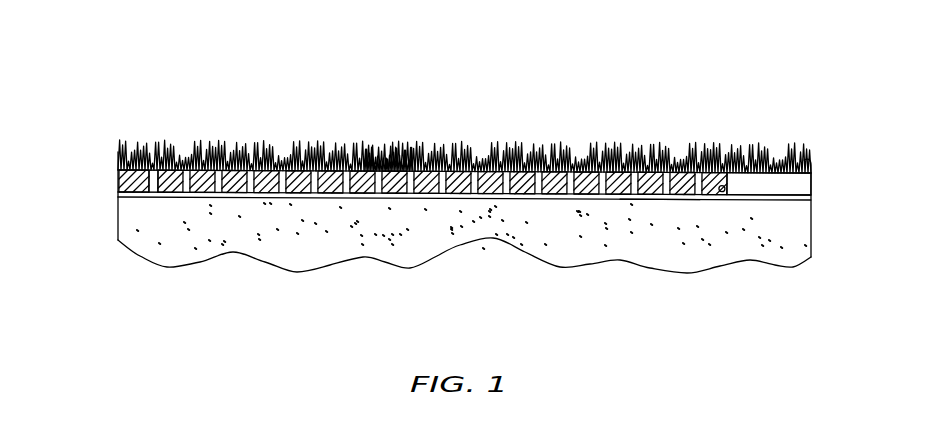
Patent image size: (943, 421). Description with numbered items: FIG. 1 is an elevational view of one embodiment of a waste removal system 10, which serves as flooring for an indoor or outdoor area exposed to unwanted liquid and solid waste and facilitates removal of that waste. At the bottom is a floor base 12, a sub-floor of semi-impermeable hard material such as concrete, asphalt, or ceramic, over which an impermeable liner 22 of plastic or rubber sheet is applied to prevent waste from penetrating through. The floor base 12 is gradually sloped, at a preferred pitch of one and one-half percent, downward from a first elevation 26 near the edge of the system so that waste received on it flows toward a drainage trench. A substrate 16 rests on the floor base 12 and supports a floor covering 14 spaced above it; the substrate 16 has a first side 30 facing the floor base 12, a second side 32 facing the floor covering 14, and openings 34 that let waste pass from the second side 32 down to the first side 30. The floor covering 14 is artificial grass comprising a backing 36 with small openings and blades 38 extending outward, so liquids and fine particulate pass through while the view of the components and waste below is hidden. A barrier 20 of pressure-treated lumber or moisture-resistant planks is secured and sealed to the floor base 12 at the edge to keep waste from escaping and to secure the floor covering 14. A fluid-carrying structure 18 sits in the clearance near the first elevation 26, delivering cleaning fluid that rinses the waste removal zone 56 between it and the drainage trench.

The waste removal system 10 is at (178, 93).
The floor base 12 is at (133, 243).
The floor covering 14 is at (118, 152).
The substrate 16 is at (120, 182).
The fluid-carrying structure 18 is at (724, 189).
The barrier 20 is at (764, 188).
The impermeable liner 22 is at (120, 197).
The first elevation 26 is at (589, 182).
The first side 30 is at (167, 196).
The second side 32 is at (233, 160).
The openings 34 is at (315, 196).
The backing 36 is at (525, 175).
The blades 38 is at (412, 150).
The waste removal zone 56 is at (650, 205).